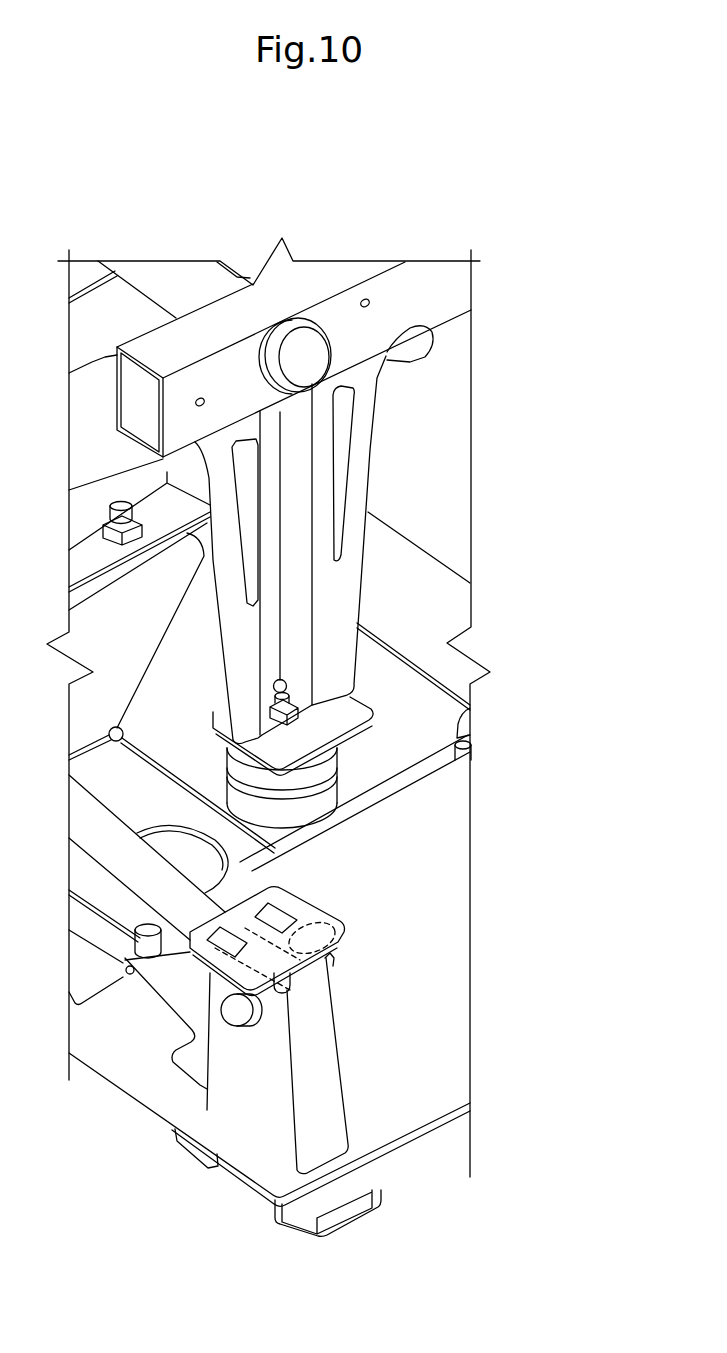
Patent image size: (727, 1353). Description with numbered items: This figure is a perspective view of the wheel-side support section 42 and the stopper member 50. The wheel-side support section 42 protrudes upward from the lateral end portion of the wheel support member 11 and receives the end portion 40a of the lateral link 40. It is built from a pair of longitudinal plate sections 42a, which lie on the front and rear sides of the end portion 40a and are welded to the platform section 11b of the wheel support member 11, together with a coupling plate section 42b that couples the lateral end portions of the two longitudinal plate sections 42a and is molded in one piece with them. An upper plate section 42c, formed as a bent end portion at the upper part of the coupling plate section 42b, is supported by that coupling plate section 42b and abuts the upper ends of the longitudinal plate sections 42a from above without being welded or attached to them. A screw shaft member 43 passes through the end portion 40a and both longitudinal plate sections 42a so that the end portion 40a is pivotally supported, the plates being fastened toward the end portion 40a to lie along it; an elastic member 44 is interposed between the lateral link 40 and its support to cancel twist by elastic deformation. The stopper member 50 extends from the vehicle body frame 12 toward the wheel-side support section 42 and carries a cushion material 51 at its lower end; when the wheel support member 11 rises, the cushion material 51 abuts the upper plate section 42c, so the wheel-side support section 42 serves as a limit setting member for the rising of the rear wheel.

The wheel support member 11 is at (308, 737).
The platform section 11b is at (433, 903).
The vehicle body frame 12 is at (318, 278).
The lateral link 40 is at (249, 859).
The end portion 40a is at (318, 926).
The wheel-side support section 42 is at (261, 1008).
The longitudinal plate sections 42a is at (366, 898).
The coupling plate section 42b is at (330, 1038).
The upper plate section 42c is at (290, 900).
The screw shaft member 43 is at (232, 1005).
The elastic member 44 is at (337, 957).
The stopper member 50 is at (337, 592).
The cushion material 51 is at (313, 810).